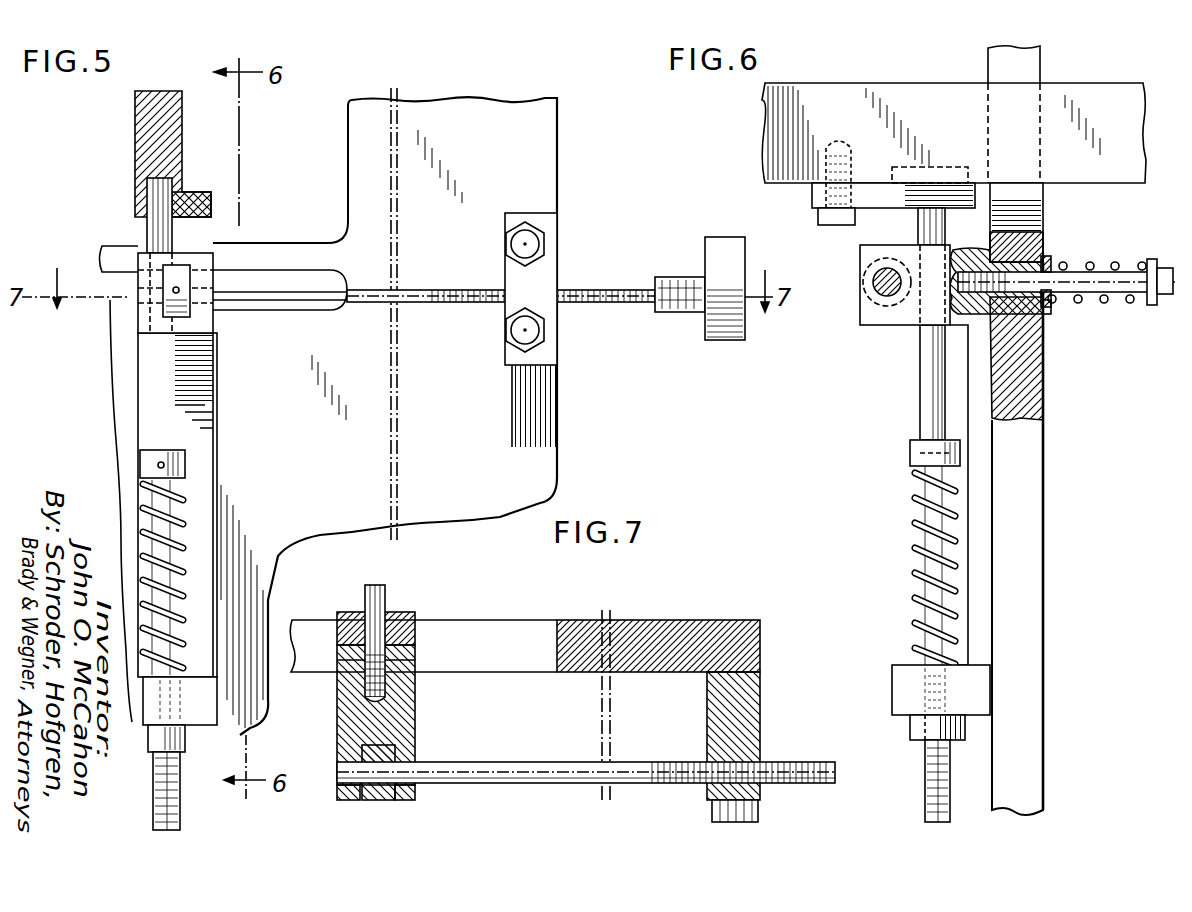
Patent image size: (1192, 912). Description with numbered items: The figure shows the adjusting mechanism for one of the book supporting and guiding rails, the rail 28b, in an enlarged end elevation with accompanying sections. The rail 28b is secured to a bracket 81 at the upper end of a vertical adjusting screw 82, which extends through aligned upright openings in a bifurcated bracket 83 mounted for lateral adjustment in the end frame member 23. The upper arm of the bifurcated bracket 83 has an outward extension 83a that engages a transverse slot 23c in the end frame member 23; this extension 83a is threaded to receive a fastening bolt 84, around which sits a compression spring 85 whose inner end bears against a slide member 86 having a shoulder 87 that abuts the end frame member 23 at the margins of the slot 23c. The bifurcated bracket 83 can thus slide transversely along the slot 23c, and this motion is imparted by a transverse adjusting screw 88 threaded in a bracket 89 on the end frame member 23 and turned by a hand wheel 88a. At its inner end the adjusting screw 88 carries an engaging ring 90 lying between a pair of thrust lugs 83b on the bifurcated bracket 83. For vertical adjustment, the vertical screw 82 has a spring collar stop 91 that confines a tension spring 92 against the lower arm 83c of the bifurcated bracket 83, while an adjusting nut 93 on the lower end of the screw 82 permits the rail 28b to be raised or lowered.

In FIG. 5, the end frame member 23 is at (540, 455).
In FIG. 6, the end frame member 23 is at (1028, 488).
In FIG. 7, the end frame member 23 is at (698, 622).
In FIG. 5, the transverse slot 23c is at (110, 303).
In FIG. 7, the transverse slot 23c is at (462, 637).
In FIG. 5, the book supporting and guide rail 28b is at (135, 128).
In FIG. 6, the book supporting and guide rail 28b is at (908, 62).
In FIG. 5, the bracket 81 is at (182, 195).
In FIG. 6, the bracket 81 is at (898, 203).
In FIG. 5, the vertical adjusting screw 82 is at (155, 370).
In FIG. 6, the vertical adjusting screw 82 is at (925, 370).
In FIG. 5, the bifurcated bracket 83 is at (185, 386).
In FIG. 6, the bifurcated bracket 83 is at (975, 398).
In FIG. 7, the bifurcated bracket 83 is at (418, 713).
In FIG. 6, the outward extension 83a is at (992, 245).
In FIG. 7, the outward extension 83a is at (340, 662).
In FIG. 5, the thrust lugs 83b is at (140, 255).
In FIG. 6, the thrust lugs 83b is at (865, 318).
In FIG. 7, the thrust lugs 83b is at (340, 792).
In FIG. 5, the lower arm 83c is at (197, 715).
In FIG. 6, the lower arm 83c is at (905, 670).
In FIG. 6, the fastening bolt 84 is at (1100, 272).
In FIG. 7, the fastening bolt 84 is at (385, 600).
In FIG. 6, the compression spring 85 is at (1066, 262).
In FIG. 6, the slide member 86 is at (1047, 258).
In FIG. 7, the slide member 86 is at (342, 614).
In FIG. 6, the shoulder 87 is at (1045, 302).
In FIG. 5, the transverse adjusting screw 88 is at (584, 290).
In FIG. 6, the transverse adjusting screw 88 is at (880, 276).
In FIG. 7, the transverse adjusting screw 88 is at (553, 745).
In FIG. 5, the hand wheel 88a is at (722, 240).
In FIG. 5, the bracket 89 is at (557, 322).
In FIG. 7, the bracket 89 is at (762, 710).
In FIG. 5, the engaging ring 90 is at (180, 272).
In FIG. 6, the engaging ring 90 is at (868, 316).
In FIG. 7, the engaging ring 90 is at (380, 800).
In FIG. 5, the spring collar stop 91 is at (185, 466).
In FIG. 6, the spring collar stop 91 is at (910, 445).
In FIG. 5, the tension spring 92 is at (172, 620).
In FIG. 6, the tension spring 92 is at (912, 513).
In FIG. 5, the adjusting nut 93 is at (186, 770).
In FIG. 6, the adjusting nut 93 is at (910, 730).